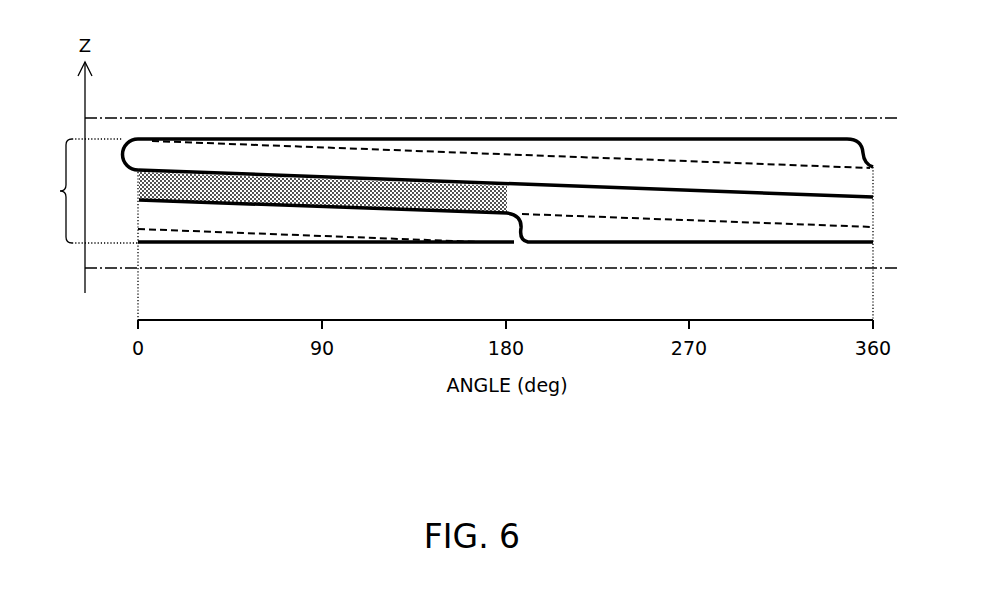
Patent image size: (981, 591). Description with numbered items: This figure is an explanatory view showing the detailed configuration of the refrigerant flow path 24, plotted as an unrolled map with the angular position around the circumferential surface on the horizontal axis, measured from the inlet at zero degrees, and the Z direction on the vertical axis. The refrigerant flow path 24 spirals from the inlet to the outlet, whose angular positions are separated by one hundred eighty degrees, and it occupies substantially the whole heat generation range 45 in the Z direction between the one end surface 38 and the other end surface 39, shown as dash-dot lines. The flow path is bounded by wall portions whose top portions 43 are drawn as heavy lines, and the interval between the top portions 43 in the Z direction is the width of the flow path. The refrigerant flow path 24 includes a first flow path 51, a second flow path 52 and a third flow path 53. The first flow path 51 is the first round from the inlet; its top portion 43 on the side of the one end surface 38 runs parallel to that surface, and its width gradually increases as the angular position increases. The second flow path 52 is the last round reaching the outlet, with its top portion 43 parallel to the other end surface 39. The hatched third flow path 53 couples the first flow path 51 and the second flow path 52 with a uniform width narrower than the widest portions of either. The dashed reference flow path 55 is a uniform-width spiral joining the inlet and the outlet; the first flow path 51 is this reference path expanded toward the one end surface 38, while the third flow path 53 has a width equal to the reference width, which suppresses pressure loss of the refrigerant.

The refrigerant flow path 24 is at (507, 159).
The one end surface 38 is at (84, 118).
The other end surface 39 is at (84, 268).
The top portion 43 is at (152, 200).
The heat generation range 45 is at (45, 191).
The first flow path 51 is at (538, 172).
The second flow path 52 is at (653, 210).
The third flow path 53 is at (331, 191).
The reference flow path 55 is at (728, 162).